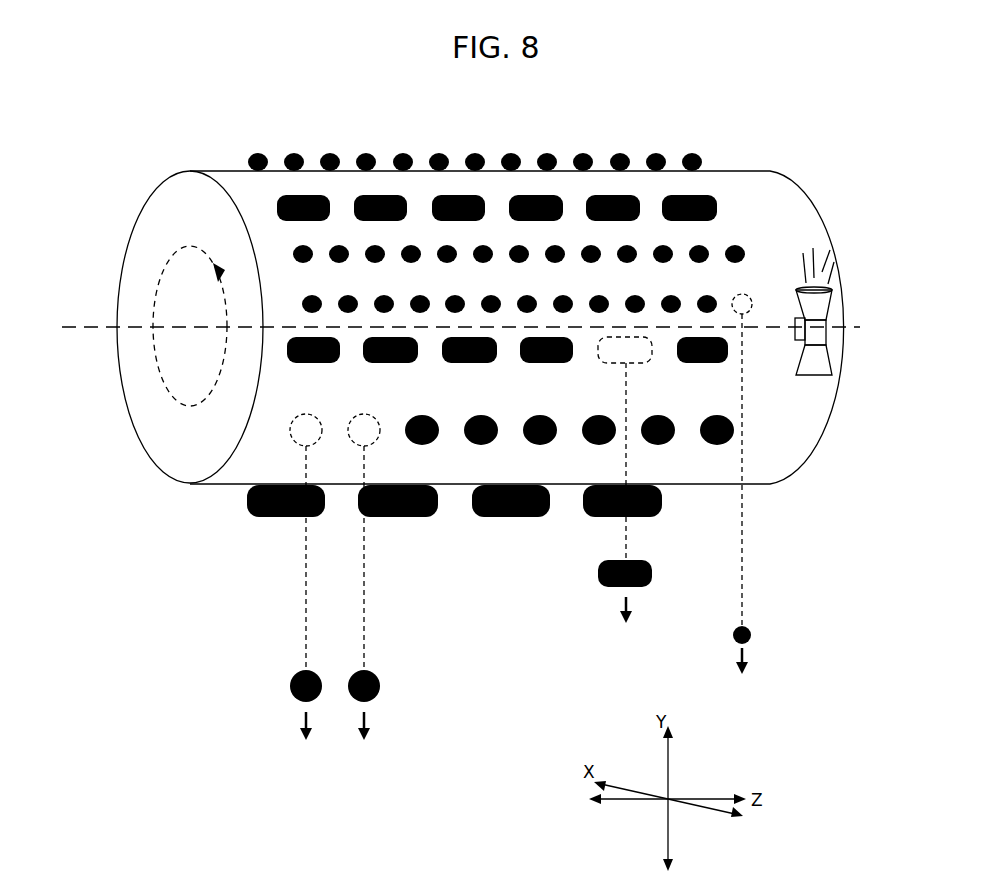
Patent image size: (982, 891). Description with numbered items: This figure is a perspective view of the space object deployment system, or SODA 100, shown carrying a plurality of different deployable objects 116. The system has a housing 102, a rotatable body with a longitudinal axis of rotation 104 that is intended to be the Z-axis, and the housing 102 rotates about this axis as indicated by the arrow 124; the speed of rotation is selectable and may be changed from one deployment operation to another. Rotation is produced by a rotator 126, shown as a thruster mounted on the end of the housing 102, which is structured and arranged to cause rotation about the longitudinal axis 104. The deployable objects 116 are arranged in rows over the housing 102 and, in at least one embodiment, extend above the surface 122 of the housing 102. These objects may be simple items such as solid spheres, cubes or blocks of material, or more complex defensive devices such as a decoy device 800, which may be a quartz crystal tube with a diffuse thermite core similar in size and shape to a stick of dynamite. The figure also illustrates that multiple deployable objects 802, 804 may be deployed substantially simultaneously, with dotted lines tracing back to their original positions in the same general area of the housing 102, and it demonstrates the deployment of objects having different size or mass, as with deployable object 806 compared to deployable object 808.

The space object deployment system 100 is at (790, 143).
The housing 102 is at (815, 212).
The longitudinal axis of rotation 104 is at (444, 328).
The deployable object 116 is at (258, 154).
The surface of the housing 122 is at (208, 486).
The arrow indicating rotation 124 is at (190, 317).
The rotator 126 is at (822, 312).
The decoy device 800 is at (276, 518).
The deployable object 802 is at (290, 684).
The deployable object 804 is at (380, 686).
The deployable object 806 is at (733, 634).
The deployable object 808 is at (598, 574).